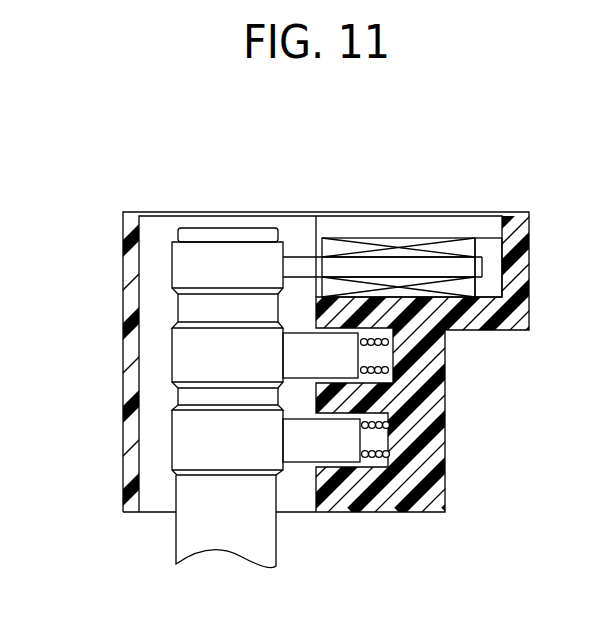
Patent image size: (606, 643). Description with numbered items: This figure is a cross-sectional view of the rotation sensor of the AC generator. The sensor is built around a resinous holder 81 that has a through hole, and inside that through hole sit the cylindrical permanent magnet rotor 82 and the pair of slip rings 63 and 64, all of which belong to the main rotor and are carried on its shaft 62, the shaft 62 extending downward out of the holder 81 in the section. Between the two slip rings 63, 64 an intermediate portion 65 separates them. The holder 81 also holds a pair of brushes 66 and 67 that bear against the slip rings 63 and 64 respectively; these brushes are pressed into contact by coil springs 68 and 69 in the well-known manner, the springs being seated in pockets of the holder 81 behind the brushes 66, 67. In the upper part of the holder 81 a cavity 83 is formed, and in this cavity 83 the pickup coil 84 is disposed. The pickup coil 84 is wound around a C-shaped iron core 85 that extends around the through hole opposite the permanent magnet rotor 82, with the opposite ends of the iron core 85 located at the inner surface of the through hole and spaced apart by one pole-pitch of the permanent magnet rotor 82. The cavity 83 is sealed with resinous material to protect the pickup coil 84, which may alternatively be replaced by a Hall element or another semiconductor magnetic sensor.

The shaft 62 is at (238, 530).
The slip ring 63 is at (185, 355).
The slip ring 64 is at (193, 443).
The insulating ring 65 is at (195, 397).
The first terminal 66 is at (333, 365).
The second terminal 67 is at (327, 450).
The coil spring 68 is at (390, 380).
The coil spring 69 is at (380, 445).
The resinous holder 81 is at (430, 492).
The permanent magnet rotor 82 is at (259, 256).
The cavity 83 is at (392, 222).
The pickup coil 84 is at (465, 245).
The C-shaped iron core 85 is at (425, 267).